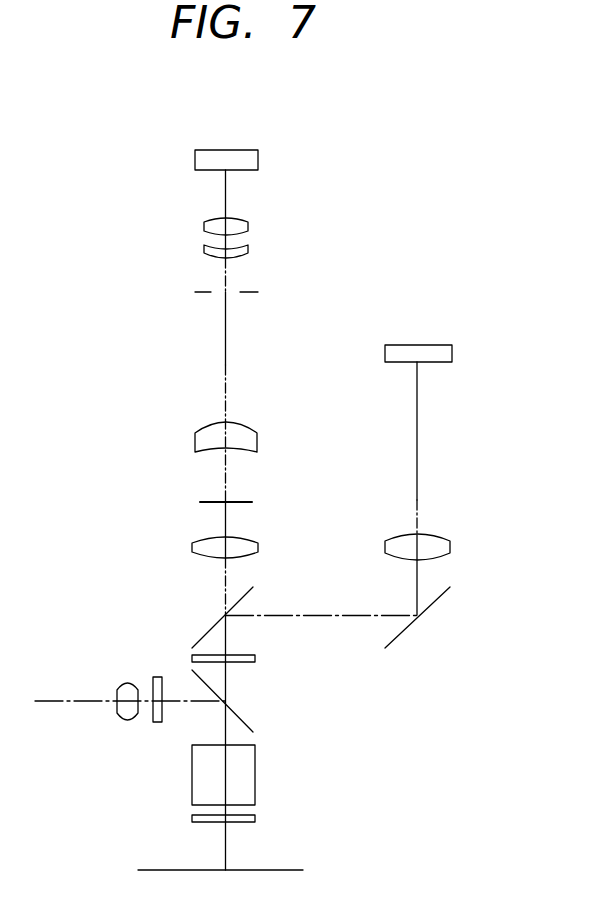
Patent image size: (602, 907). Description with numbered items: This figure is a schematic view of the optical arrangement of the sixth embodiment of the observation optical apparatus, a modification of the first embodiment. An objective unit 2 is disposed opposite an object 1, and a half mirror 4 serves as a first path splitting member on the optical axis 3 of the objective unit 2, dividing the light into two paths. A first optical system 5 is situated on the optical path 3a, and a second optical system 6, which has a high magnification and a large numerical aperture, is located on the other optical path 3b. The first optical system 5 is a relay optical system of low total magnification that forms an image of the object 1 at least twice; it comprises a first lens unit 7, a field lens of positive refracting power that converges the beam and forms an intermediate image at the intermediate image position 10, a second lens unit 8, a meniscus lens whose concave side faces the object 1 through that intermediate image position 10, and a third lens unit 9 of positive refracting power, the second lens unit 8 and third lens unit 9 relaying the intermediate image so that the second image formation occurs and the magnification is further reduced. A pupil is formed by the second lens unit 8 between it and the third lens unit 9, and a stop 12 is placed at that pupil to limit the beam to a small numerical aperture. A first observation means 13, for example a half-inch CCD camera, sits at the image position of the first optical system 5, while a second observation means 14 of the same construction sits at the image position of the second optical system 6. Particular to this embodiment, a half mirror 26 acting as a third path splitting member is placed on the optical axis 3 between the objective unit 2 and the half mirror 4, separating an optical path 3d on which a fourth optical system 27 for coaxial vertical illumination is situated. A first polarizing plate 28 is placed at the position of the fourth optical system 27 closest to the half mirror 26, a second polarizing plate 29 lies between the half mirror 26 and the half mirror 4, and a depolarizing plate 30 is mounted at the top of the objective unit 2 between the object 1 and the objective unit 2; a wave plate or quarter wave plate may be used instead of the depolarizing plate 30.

The object 1 is at (178, 870).
The objective unit 2 is at (255, 775).
The optical axis 3 is at (226, 851).
The optical path 3a is at (226, 363).
The optical path 3b is at (312, 615).
The optical path 3d is at (192, 701).
The half mirror 4 is at (208, 632).
The first optical system 5 is at (172, 200).
The second optical system 6 is at (458, 507).
The first lens unit 7 is at (258, 548).
The second lens unit 8 is at (245, 422).
The third lens unit 9 is at (262, 207).
The intermediate image position 10 is at (243, 502).
The stop 12 is at (258, 292).
The first observation means 13 is at (230, 150).
The second observation means 14 is at (385, 358).
The half mirror 26 is at (240, 712).
The fourth optical system 27 is at (170, 727).
The first polarizing plate 28 is at (155, 677).
The second polarizing plate 29 is at (255, 659).
The depolarizing plate 30 is at (255, 818).